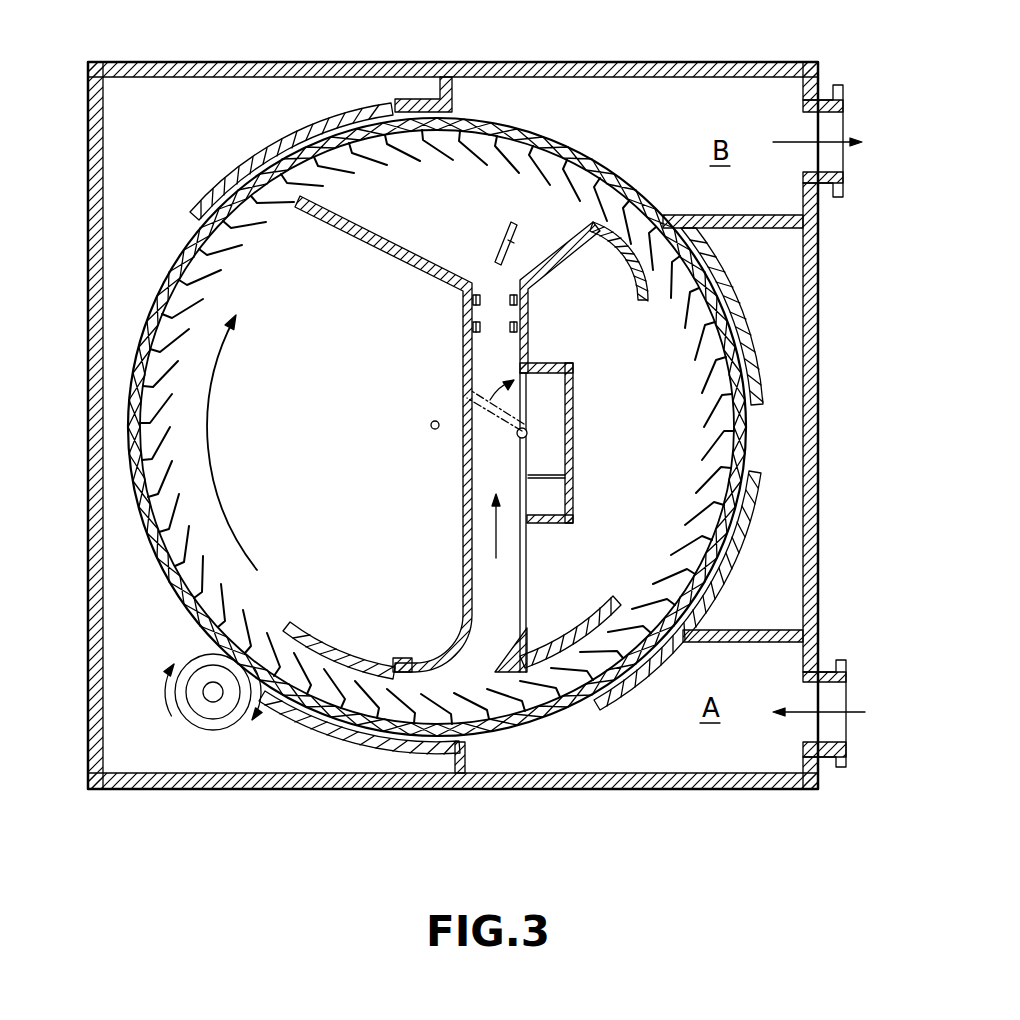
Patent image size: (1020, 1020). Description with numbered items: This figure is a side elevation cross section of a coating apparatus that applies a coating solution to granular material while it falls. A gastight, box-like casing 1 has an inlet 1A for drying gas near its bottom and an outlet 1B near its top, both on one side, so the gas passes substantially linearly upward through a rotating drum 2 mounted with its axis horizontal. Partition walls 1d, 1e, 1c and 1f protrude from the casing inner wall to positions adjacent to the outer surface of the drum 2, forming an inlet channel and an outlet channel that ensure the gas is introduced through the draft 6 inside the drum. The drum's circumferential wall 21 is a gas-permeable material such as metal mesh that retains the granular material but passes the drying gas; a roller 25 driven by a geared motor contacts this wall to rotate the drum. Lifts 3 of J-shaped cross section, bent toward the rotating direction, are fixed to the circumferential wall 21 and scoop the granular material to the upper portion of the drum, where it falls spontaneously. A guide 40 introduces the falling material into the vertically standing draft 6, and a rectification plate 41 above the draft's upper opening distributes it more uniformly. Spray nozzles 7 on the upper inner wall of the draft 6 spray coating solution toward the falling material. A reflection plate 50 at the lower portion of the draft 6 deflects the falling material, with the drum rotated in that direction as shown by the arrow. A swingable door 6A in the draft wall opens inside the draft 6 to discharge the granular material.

The casing 1 is at (745, 62).
The inlet 1A is at (833, 728).
The outlet 1B is at (825, 127).
The partition wall 1c is at (767, 230).
The partition wall 1d is at (760, 630).
The partition wall 1e is at (467, 750).
The partition wall 1f is at (455, 100).
The rotating drum 2 is at (593, 150).
The lifts 3 is at (500, 698).
The draft 6 is at (527, 562).
The movable partition plate (door) 6A is at (525, 418).
The spray nozzles 7 is at (470, 335).
The circumferential wall 21 is at (150, 545).
The roller 25 is at (217, 712).
The guide 40 is at (383, 250).
The rectification plate 41 is at (516, 222).
The reflection plate 50 is at (553, 655).